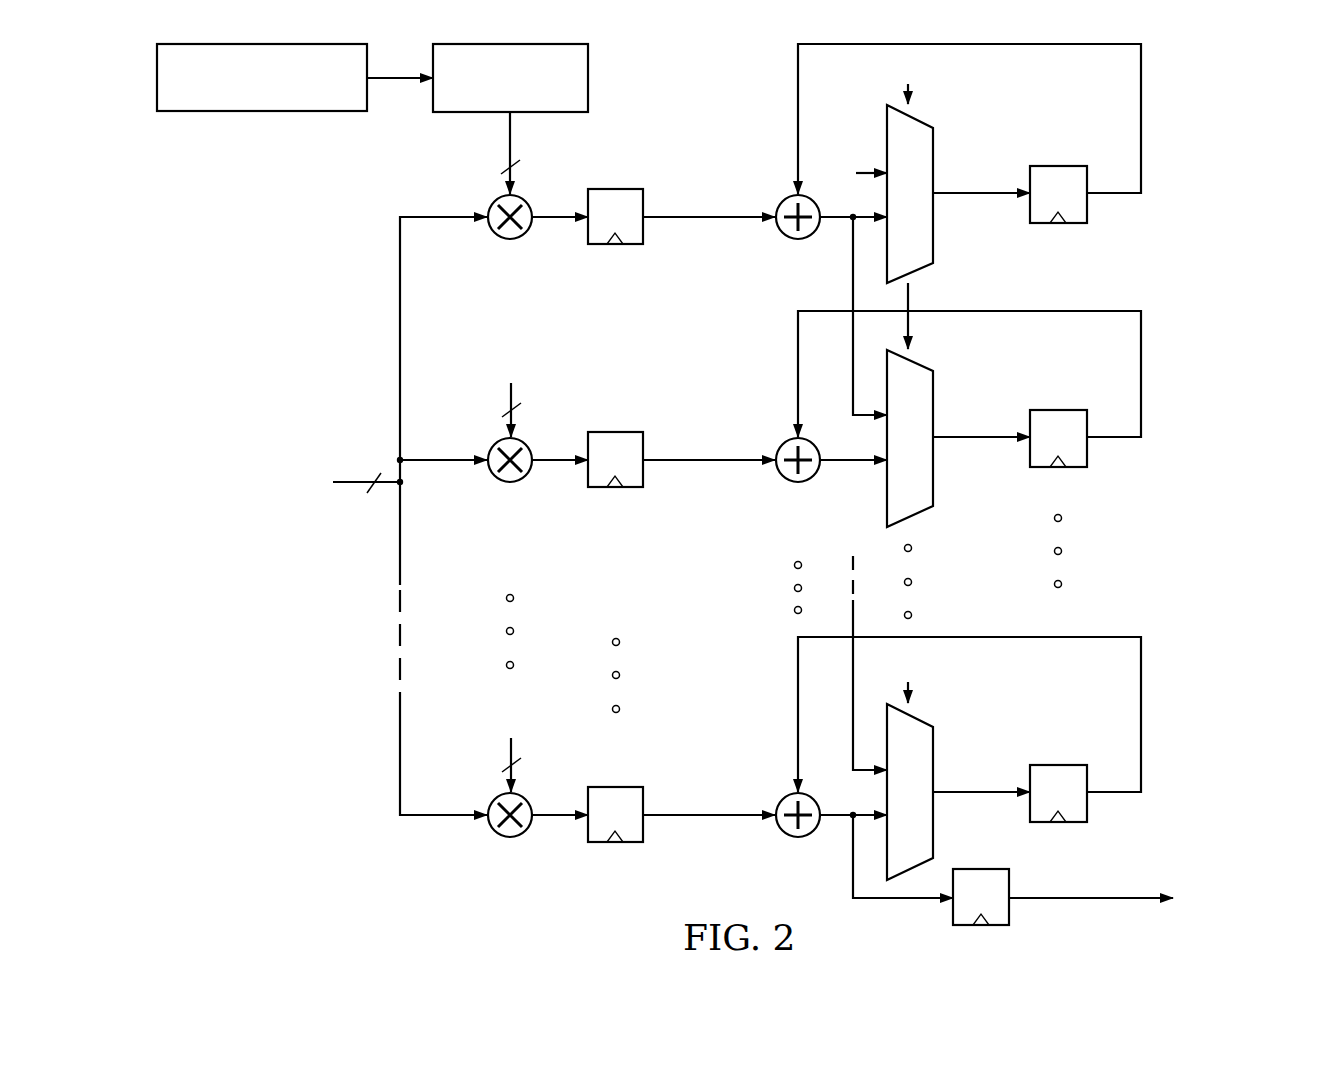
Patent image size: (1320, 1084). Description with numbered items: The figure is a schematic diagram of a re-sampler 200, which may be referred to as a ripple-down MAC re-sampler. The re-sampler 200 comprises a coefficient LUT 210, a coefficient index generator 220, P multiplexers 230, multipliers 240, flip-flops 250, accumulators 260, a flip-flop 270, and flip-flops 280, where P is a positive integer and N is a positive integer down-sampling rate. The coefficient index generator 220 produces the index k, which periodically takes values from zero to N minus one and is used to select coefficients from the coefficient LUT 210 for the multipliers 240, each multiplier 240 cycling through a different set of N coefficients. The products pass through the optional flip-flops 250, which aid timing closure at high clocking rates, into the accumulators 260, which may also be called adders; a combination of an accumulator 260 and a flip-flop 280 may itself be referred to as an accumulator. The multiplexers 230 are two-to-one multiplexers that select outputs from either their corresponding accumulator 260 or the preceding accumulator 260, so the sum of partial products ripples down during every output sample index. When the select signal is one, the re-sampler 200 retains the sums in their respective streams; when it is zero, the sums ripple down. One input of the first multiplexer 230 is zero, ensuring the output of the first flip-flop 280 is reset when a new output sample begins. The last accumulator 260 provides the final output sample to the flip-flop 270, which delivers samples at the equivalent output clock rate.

The re-sampler 200 is at (1192, 98).
The coefficient LUT 210 is at (590, 62).
The coefficient index generator 220 is at (157, 58).
The multiplexer 230 is at (935, 152).
The multiplier 240 is at (500, 240).
The flip-flop 250 is at (616, 246).
The accumulator 260 is at (778, 237).
The flip-flop 270 is at (1010, 917).
The flip-flop 280 is at (1055, 165).